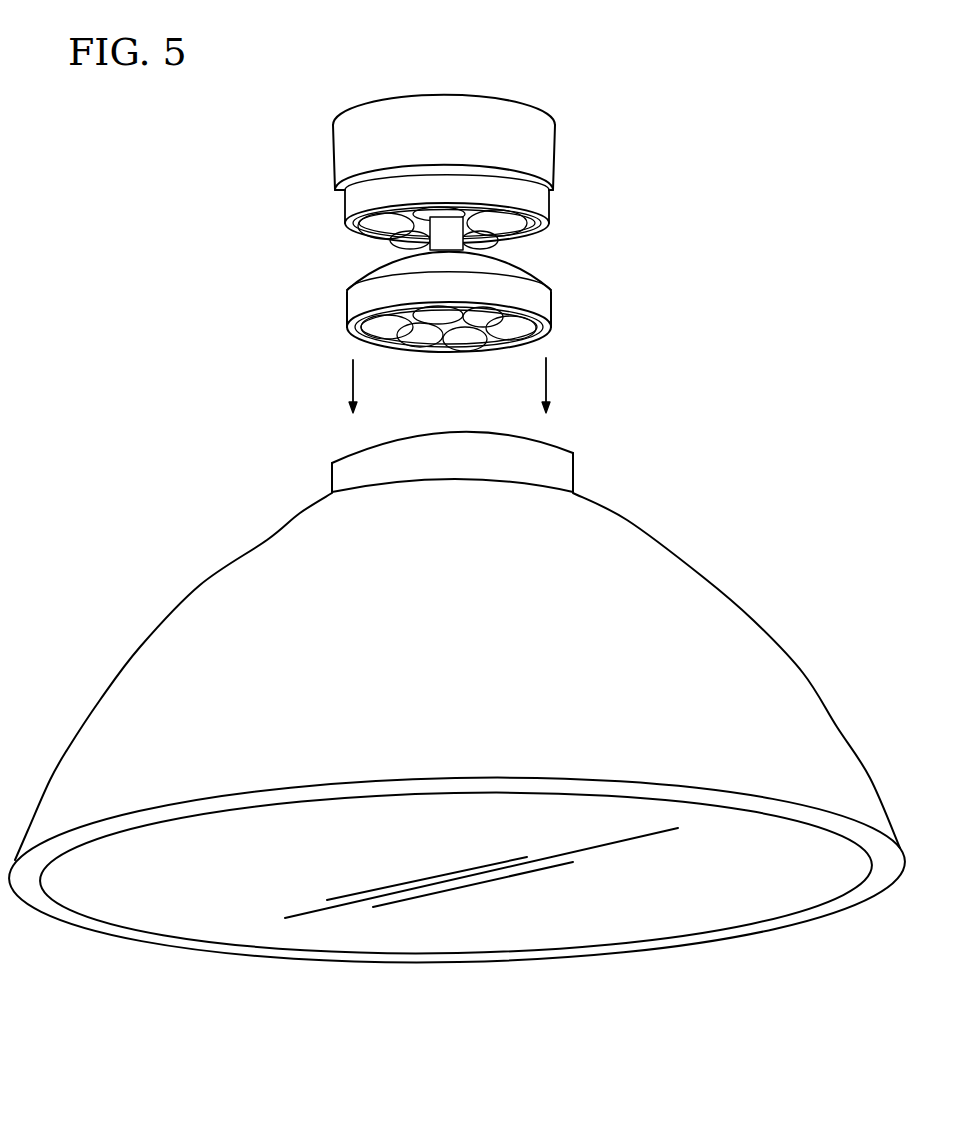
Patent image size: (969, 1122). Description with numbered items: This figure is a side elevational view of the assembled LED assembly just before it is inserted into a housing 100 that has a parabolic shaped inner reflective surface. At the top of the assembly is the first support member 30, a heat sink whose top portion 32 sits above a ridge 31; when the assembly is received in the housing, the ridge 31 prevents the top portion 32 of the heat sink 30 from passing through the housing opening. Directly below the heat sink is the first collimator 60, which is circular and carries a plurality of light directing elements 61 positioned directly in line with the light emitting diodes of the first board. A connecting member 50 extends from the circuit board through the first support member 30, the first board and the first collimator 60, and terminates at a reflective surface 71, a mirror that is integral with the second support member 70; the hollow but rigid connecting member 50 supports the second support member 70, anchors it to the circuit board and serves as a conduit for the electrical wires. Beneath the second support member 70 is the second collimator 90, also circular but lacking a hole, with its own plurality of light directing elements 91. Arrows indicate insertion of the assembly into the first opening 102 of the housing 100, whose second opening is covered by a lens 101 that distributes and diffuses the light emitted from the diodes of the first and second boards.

The first support member 30 is at (549, 210).
The ridge 31 is at (547, 203).
The top portion 32 is at (541, 151).
The connecting member 50 is at (468, 246).
The first collimator 60 is at (351, 230).
The light directing elements 61 is at (380, 241).
The second support member 70 is at (351, 304).
The reflective surface 71 is at (418, 266).
The second collimator 90 is at (361, 331).
The light directing elements 91 is at (537, 340).
The housing 100 is at (720, 638).
The lens 101 is at (723, 912).
The first opening 102 is at (566, 472).